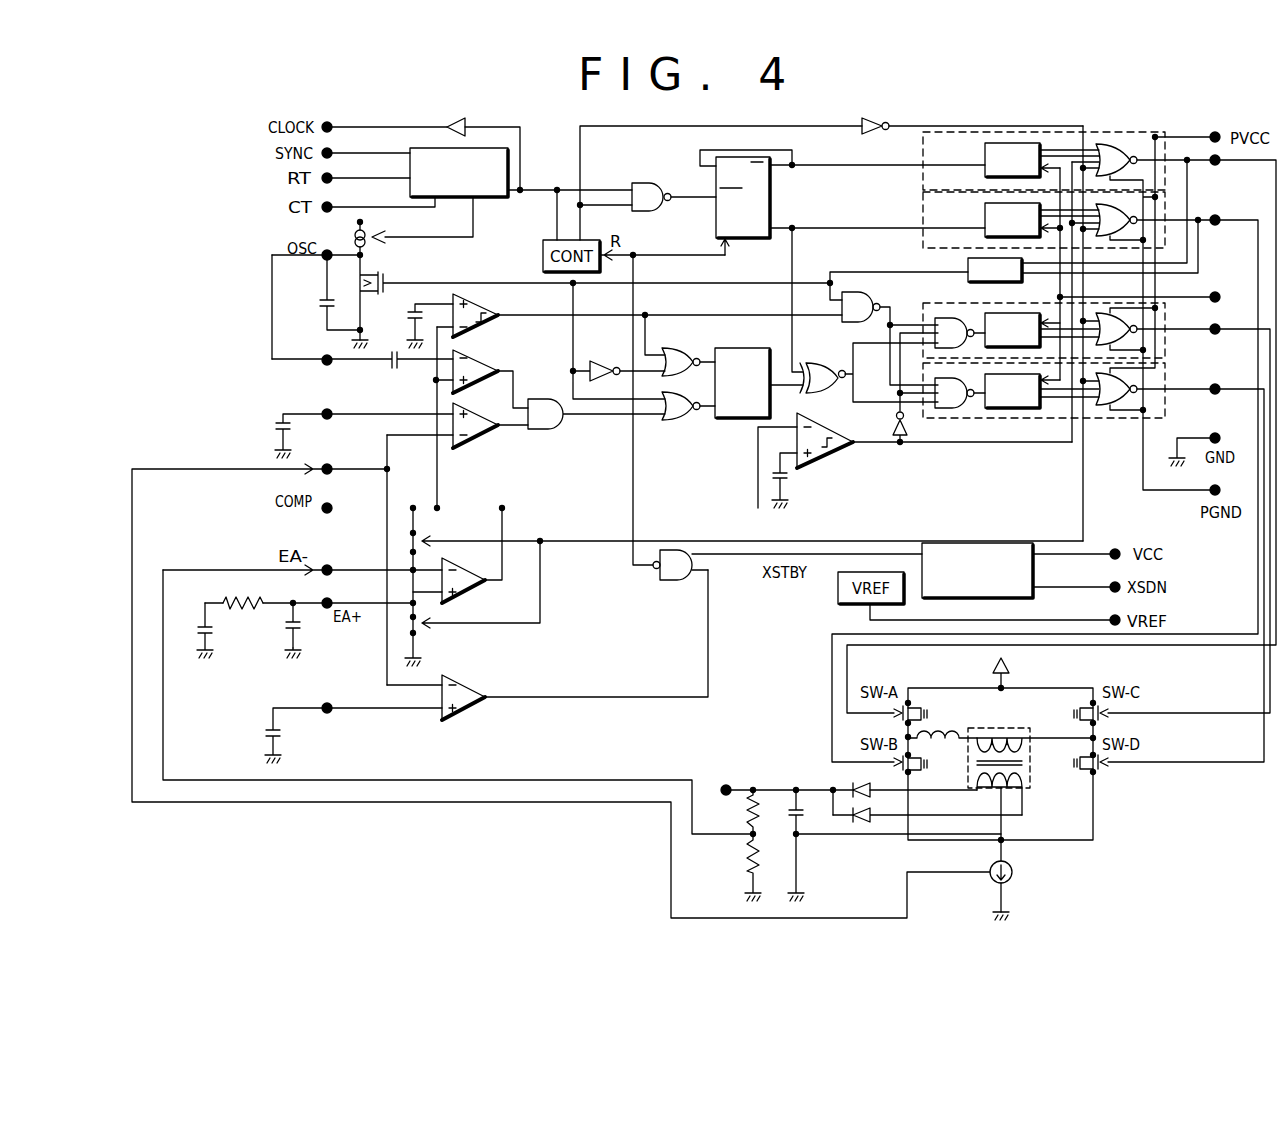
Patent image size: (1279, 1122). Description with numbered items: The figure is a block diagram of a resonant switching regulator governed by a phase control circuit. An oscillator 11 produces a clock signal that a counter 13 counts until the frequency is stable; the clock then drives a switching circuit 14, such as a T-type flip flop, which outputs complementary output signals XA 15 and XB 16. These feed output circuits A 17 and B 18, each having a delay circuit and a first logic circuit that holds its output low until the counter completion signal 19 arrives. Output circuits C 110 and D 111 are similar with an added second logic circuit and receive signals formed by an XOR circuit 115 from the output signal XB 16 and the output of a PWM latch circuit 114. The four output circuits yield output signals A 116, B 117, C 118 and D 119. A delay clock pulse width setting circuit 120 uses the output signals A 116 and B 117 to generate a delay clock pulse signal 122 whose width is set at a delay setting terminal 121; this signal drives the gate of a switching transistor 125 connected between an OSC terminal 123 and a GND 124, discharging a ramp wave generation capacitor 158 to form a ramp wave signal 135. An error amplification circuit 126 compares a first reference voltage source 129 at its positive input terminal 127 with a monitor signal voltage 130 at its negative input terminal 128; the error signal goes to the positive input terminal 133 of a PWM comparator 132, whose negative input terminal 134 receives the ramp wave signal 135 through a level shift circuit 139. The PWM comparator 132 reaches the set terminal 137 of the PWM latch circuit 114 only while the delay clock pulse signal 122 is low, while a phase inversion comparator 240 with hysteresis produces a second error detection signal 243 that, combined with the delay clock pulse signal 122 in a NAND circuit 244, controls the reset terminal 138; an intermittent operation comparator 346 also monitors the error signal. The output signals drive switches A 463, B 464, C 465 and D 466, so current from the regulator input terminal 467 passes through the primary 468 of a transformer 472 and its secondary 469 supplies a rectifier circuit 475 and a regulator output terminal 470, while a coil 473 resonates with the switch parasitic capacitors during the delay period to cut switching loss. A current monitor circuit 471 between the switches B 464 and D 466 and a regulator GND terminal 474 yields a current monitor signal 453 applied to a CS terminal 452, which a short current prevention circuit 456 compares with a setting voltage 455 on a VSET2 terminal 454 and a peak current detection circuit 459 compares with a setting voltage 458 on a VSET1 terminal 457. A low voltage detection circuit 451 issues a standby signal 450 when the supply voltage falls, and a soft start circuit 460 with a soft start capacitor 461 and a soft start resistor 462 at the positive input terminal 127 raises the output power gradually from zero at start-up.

The oscillator 11 is at (512, 172).
The counter 13 is at (594, 240).
The switching circuit 14 is at (772, 198).
The output signal XA 15 is at (800, 165).
The output signal XB 16 is at (838, 227).
The output circuit A 17 is at (921, 150).
The output circuit B 18 is at (921, 215).
The counter completion signal 19 is at (631, 128).
The output circuit C 110 is at (896, 303).
The output circuit D 111 is at (1112, 420).
The PWM latch circuit 114 is at (736, 347).
The XOR circuit 115 is at (818, 362).
The output signal A 116 is at (1212, 166).
The output signal B 117 is at (1215, 226).
The output signal C 118 is at (1219, 326).
The output signal D 119 is at (1218, 385).
The delay clock pulse width setting circuit 120 is at (966, 266).
The delay setting terminal 121 is at (1216, 301).
The delay clock pulse signal 122 is at (812, 282).
The OSC terminal 123 is at (323, 262).
The GND 124 is at (406, 658).
The switching transistor 125 is at (386, 279).
The error amplification circuit 126 is at (470, 568).
The positive input terminal 127 is at (440, 593).
The negative input terminal 128 is at (440, 557).
The first reference voltage source 129 is at (212, 632).
The monitor signal voltage 130 is at (362, 567).
The PWM comparator 132 is at (492, 366).
The positive input terminal 133 is at (452, 410).
The negative input terminal 134 is at (428, 417).
The ramp wave signal 135 is at (320, 364).
The set terminal 137 is at (700, 421).
The reset terminal 138 is at (702, 355).
The level shift circuit 139 is at (399, 376).
The ramp wave generation capacitor 158 is at (282, 301).
The phase inversion comparator 240 is at (479, 306).
The second error detection signal 243 is at (666, 316).
The NAND circuit 244 is at (828, 300).
The intermittent operation comparator 346 is at (848, 447).
The standby signal 450 is at (652, 565).
The low voltage detection circuit 451 is at (1035, 568).
The CS terminal 452 is at (333, 474).
The current monitor signal 453 is at (187, 466).
The VSET2 terminal 454 is at (327, 714).
The setting voltage 455 is at (266, 732).
The short current prevention circuit 456 is at (462, 719).
The VSET1 terminal 457 is at (331, 420).
The setting voltage 458 is at (279, 423).
The peak current detection circuit 459 is at (452, 440).
The soft start circuit 460 is at (433, 643).
The soft start capacitor 461 is at (300, 628).
The soft start resistor 462 is at (243, 597).
The switch A 463 is at (904, 705).
The switch B 464 is at (904, 775).
The switch C 465 is at (1108, 711).
The switch D 466 is at (1106, 766).
The regulator input terminal 467 is at (997, 680).
The primary 468 is at (1000, 735).
The secondary 469 is at (977, 789).
The regulator output terminal 470 is at (722, 783).
The current monitor circuit 471 is at (989, 877).
The transformer 472 is at (1032, 772).
The coil 473 is at (938, 733).
The regulator GND terminal 474 is at (1009, 912).
The rectifier circuit 475 is at (849, 831).